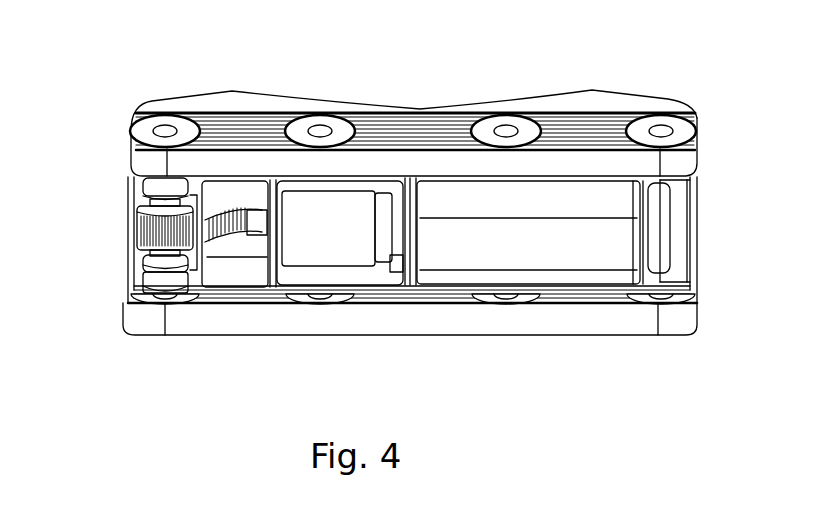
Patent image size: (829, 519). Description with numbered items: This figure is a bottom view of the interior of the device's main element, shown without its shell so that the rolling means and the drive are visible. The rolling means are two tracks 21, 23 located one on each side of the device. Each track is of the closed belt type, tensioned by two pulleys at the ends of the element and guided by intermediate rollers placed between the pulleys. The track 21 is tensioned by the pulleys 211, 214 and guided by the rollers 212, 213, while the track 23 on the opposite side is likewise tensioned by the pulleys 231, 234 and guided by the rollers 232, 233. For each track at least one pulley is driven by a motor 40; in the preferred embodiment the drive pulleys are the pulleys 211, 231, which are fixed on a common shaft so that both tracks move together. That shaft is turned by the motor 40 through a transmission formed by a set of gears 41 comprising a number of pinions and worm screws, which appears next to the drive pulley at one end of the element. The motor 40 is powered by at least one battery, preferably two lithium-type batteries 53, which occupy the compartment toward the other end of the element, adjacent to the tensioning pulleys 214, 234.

The track 21 is at (128, 315).
The track 23 is at (133, 157).
The motor 40 is at (340, 232).
The set of gears 41 is at (130, 232).
The lithium-type batteries 53 is at (610, 202).
The pulley 211 is at (167, 303).
The roller 212 is at (327, 307).
The roller 213 is at (527, 303).
The pulley 214 is at (677, 307).
The pulley 231 is at (167, 120).
The roller 232 is at (322, 117).
The roller 233 is at (508, 117).
The pulley 234 is at (662, 117).